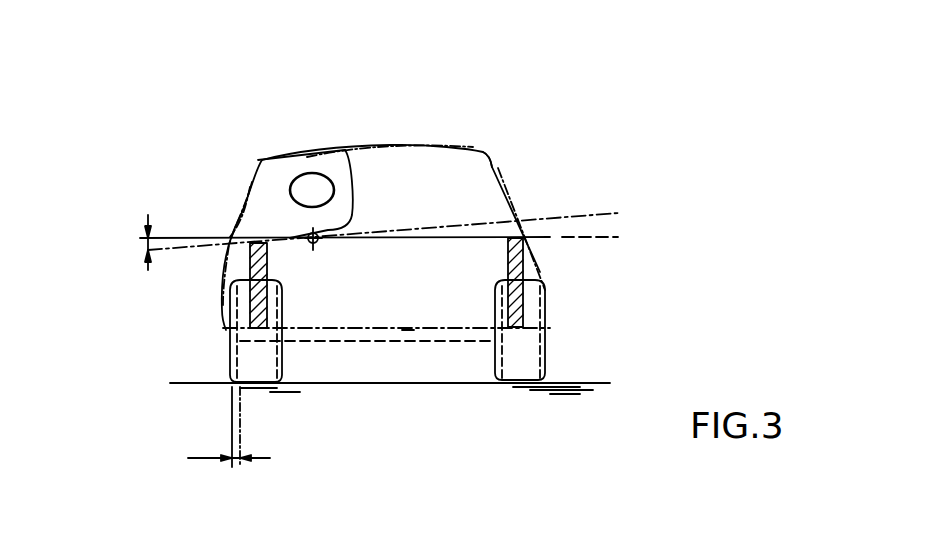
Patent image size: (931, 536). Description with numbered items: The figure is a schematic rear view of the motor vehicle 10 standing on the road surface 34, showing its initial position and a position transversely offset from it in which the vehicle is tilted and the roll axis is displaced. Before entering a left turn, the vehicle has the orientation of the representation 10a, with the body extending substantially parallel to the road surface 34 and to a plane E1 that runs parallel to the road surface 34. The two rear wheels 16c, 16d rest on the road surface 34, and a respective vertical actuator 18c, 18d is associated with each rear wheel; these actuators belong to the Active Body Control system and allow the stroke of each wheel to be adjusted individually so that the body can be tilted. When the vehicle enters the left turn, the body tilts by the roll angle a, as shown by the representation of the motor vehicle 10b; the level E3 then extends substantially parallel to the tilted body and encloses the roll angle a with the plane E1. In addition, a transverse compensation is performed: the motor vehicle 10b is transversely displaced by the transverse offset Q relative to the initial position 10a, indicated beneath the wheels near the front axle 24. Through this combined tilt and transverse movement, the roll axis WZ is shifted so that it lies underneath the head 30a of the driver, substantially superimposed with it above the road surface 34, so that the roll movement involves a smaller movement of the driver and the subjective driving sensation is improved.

The motor vehicle 10 is at (487, 100).
The motor vehicle in initial position 10a is at (277, 155).
The motor vehicle in tilted and offset position 10b is at (477, 142).
The head of the driver 30a is at (290, 195).
The roll axis WZ is at (352, 227).
The plane parallel to road surface E1 is at (603, 237).
The level of tilted body E3 is at (598, 214).
The roll angle a is at (142, 243).
The vertical actuator 18c is at (248, 295).
The vertical actuator 18d is at (523, 265).
The rear wheel 16c is at (227, 350).
The rear wheel 16d is at (545, 347).
The transverse offset Q is at (226, 427).
The road surface 34 is at (360, 373).
The front axle 24 is at (408, 331).